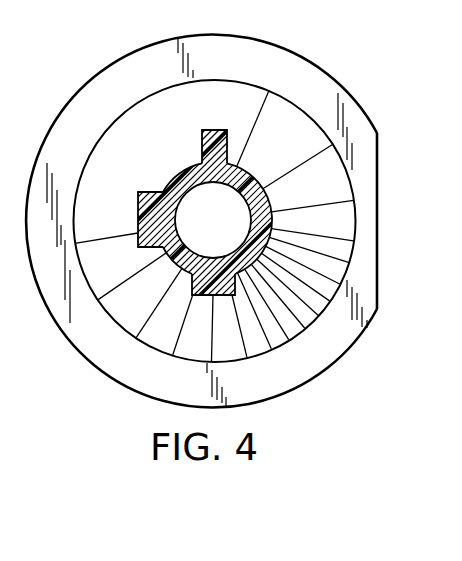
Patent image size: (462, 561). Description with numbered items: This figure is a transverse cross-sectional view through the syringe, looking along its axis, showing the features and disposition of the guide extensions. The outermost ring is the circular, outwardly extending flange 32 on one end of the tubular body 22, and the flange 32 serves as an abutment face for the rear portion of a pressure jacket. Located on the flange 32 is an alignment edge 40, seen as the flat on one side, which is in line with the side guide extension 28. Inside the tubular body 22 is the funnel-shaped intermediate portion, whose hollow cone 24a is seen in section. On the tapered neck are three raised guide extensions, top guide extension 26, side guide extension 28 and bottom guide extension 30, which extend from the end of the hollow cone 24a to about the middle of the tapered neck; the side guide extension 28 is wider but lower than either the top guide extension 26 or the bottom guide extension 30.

The tubular body 22 is at (123, 107).
The hollow cone 24a is at (158, 335).
The top guide extension 26 is at (201, 138).
The side guide extension 28 is at (138, 200).
The bottom guide extension 30 is at (197, 291).
The flange 32 is at (317, 84).
The alignment edge 40 is at (378, 206).